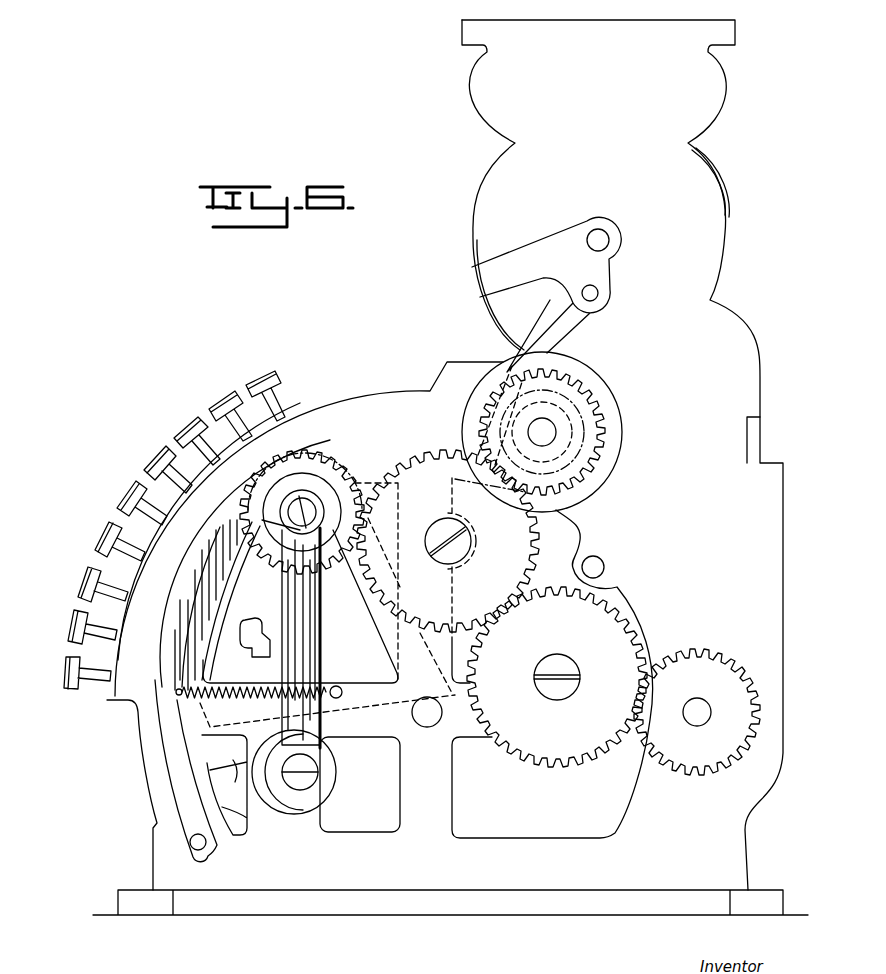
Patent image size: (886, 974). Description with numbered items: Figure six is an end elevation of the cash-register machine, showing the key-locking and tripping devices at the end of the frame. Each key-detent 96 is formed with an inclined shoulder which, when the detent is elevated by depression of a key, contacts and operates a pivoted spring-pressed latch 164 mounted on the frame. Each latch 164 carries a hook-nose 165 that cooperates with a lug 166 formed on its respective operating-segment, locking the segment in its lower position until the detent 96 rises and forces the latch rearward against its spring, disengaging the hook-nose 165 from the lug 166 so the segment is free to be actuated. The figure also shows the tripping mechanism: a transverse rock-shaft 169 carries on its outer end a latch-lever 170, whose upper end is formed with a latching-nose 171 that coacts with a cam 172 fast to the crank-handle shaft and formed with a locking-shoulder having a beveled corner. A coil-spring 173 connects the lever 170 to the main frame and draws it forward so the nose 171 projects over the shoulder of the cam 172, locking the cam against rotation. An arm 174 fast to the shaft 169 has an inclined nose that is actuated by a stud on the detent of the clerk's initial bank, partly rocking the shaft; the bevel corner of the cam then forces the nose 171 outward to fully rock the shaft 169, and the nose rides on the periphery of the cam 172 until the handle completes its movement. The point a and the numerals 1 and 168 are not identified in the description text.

The frame 1 is at (555, 195).
The key-detent 96 is at (245, 583).
The pivoted spring-pressed latch 164 is at (273, 657).
The hook-nose 165 is at (257, 623).
The lug 166 is at (240, 637).
The swinging arm 168 is at (240, 683).
The transverse rock-shaft 169 is at (208, 843).
The latch-lever 170 is at (200, 585).
The latching-nose 171 is at (257, 495).
The cam 172 is at (322, 476).
The coil-spring 173 is at (207, 713).
The arm 174 is at (240, 525).
The point a is at (262, 520).